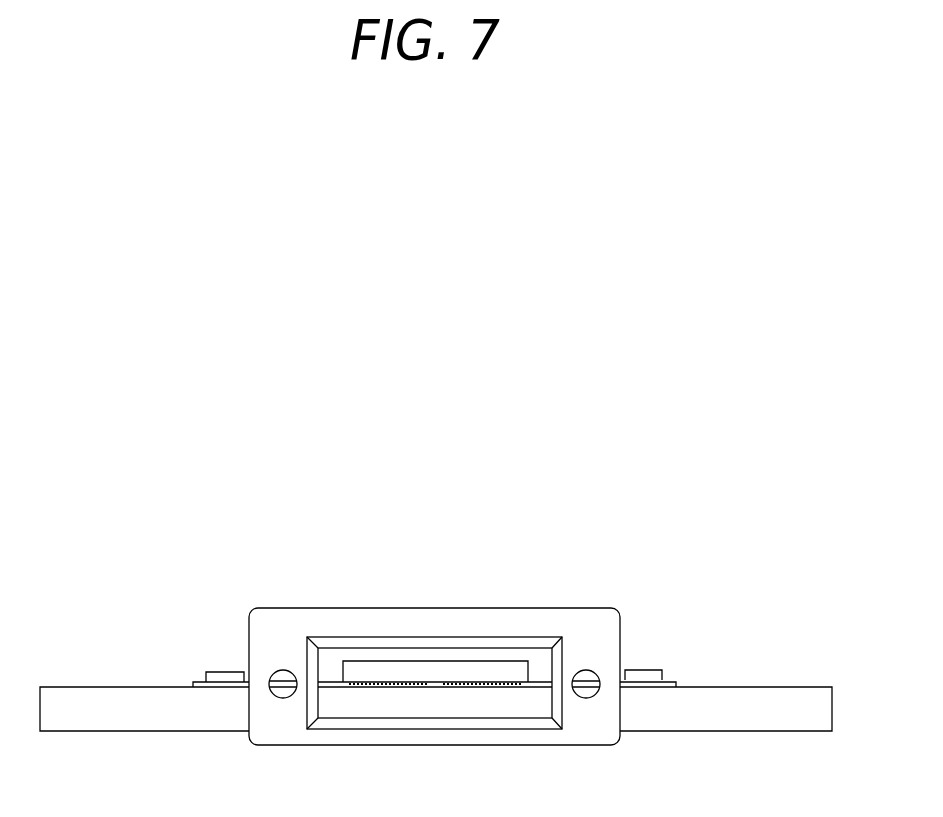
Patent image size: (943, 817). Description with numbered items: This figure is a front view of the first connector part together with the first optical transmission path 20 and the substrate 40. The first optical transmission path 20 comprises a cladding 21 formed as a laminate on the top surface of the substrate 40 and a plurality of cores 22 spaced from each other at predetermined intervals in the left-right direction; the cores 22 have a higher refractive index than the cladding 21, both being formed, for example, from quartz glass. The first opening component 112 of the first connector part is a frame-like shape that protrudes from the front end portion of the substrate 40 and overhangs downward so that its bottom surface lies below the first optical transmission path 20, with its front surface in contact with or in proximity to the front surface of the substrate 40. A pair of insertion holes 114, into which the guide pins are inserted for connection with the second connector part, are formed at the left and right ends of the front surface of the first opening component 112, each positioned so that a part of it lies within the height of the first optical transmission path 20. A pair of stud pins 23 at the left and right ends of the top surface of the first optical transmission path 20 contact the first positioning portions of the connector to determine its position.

The first opening component 112 is at (258, 618).
The insertion holes 114 is at (284, 670).
The first optical transmission path 20 is at (430, 683).
The cladding 21 is at (666, 683).
The cores 22 is at (358, 683).
The stud pins 23 is at (226, 677).
The substrate 40 is at (787, 706).